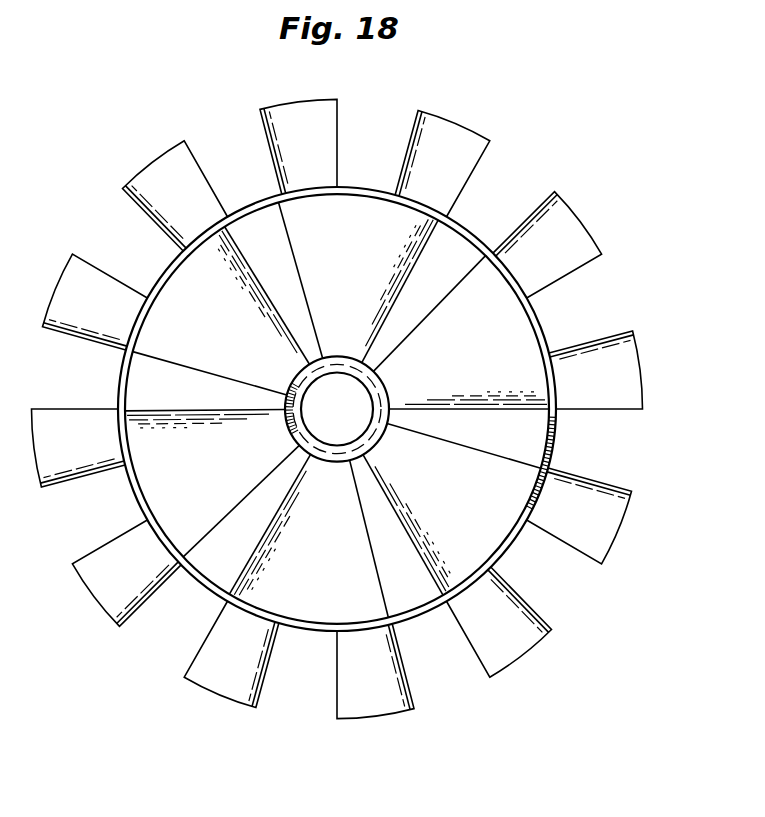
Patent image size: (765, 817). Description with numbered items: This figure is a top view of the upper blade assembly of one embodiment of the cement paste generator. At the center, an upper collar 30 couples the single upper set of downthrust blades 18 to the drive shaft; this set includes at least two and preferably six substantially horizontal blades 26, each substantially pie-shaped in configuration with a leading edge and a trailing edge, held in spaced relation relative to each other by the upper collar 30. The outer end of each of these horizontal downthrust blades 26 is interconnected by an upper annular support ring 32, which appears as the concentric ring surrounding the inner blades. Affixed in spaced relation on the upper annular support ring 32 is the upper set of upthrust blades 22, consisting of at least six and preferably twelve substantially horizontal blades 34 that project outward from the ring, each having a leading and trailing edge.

The upper set of downthrust blades 18 is at (436, 255).
The upper set of upthrust blades 22 is at (612, 317).
The substantially horizontal blades 26 is at (153, 353).
The upper collar 30 is at (390, 415).
The upper annular support ring 32 is at (128, 490).
The substantially horizontal blades 34 is at (82, 270).